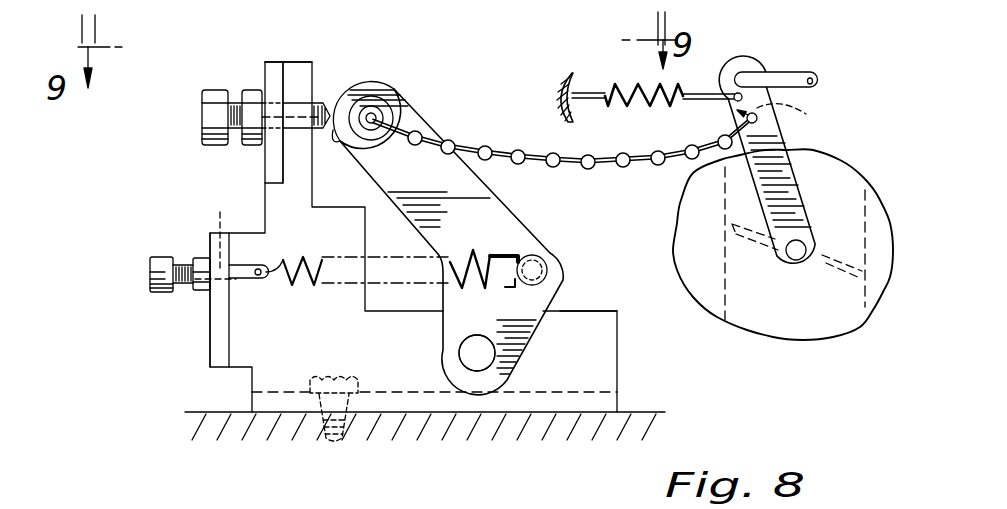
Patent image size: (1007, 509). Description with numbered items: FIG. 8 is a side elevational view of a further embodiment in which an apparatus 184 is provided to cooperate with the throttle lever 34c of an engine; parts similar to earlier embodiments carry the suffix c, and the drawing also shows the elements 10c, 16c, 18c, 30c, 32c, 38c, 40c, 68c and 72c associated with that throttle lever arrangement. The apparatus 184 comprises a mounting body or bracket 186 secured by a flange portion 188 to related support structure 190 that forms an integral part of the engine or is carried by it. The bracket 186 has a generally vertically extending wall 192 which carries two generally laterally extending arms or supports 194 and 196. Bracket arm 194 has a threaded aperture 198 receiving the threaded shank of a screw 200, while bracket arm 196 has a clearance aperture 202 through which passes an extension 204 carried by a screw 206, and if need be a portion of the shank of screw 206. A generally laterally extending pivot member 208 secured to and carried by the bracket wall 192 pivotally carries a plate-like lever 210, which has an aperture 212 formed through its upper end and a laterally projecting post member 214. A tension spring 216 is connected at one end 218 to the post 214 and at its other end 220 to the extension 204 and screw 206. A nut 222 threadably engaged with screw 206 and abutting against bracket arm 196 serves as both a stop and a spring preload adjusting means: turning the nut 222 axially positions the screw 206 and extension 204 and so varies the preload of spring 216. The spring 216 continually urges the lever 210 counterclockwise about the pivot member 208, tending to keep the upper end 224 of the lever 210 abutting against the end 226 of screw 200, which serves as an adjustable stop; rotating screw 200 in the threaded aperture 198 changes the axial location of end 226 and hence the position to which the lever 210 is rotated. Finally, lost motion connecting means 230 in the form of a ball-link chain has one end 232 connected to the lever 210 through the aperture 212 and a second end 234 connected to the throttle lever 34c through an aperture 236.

The roller assembly 10c is at (858, 150).
The drum 16c is at (880, 283).
The drum periphery 18c is at (866, 200).
The shaft 30c is at (758, 243).
The hub 32c is at (799, 272).
The throttle lever 34c is at (813, 227).
The pivot boss 38c is at (748, 70).
The pivot pin 40c is at (805, 72).
The tension spring 68c is at (626, 104).
The cup stop 72c is at (568, 76).
The apparatus 184 is at (196, 376).
The mounting body or bracket 186 is at (619, 356).
The flange portion 188 is at (573, 388).
The support structure 190 is at (640, 412).
The wall 192 is at (567, 332).
The bracket arm 194 is at (290, 70).
The bracket arm 196 is at (232, 338).
The threaded aperture 198 is at (248, 130).
The screw 200 is at (212, 98).
The clearance aperture 202 is at (220, 223).
The extension 204 is at (262, 266).
The screw 206 is at (162, 292).
The pivot member 208 is at (490, 364).
The lever 210 is at (439, 341).
The aperture 212 is at (376, 112).
The post member 214 is at (545, 257).
The tension spring 216 is at (476, 251).
The end of spring 218 is at (512, 286).
The other end of spring 220 is at (258, 278).
The nut 222 is at (198, 256).
The upper end of lever 224 is at (334, 140).
The end of screw 226 is at (338, 92).
The lost motion connecting means 230 is at (568, 168).
The end of chain 232 is at (374, 132).
The second end of chain 234 is at (803, 107).
The aperture 236 is at (793, 131).